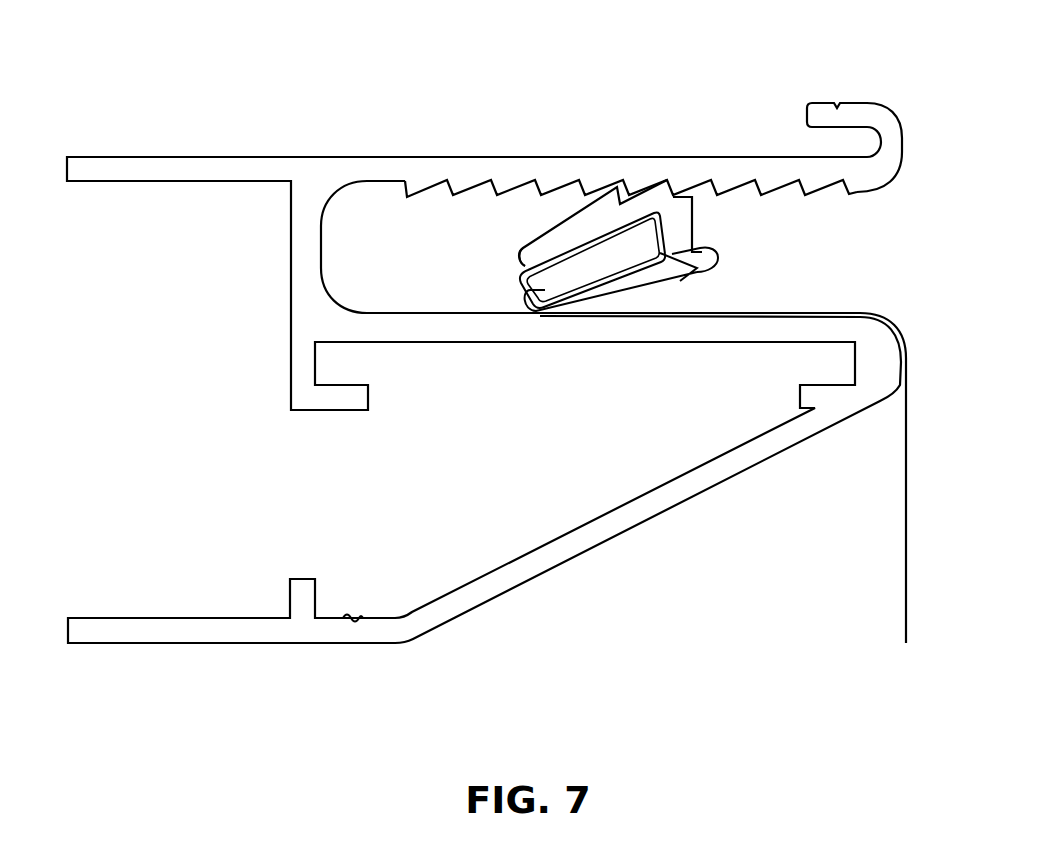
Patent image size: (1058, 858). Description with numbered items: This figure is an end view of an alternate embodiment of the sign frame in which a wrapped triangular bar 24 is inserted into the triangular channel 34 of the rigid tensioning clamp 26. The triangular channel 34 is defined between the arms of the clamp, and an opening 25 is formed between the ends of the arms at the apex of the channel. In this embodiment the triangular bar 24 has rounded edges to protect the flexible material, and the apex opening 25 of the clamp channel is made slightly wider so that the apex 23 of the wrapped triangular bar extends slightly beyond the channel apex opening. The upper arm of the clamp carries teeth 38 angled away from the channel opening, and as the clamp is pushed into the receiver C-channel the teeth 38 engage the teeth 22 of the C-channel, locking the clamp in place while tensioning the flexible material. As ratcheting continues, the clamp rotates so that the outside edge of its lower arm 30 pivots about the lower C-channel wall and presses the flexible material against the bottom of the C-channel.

The teeth of the C-channel 22 is at (543, 191).
The teeth 38 is at (618, 188).
The tensioning clamp 26 is at (521, 253).
The opening 25 is at (520, 270).
The apex of the triangular bar 23 is at (527, 279).
The lower arm 30 is at (561, 294).
The triangular bar 24 is at (708, 268).
The triangular channel 34 is at (690, 208).